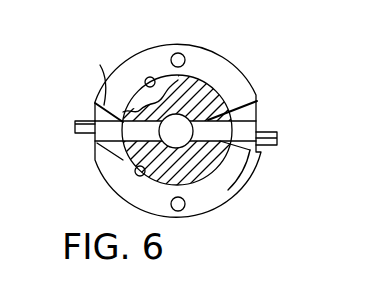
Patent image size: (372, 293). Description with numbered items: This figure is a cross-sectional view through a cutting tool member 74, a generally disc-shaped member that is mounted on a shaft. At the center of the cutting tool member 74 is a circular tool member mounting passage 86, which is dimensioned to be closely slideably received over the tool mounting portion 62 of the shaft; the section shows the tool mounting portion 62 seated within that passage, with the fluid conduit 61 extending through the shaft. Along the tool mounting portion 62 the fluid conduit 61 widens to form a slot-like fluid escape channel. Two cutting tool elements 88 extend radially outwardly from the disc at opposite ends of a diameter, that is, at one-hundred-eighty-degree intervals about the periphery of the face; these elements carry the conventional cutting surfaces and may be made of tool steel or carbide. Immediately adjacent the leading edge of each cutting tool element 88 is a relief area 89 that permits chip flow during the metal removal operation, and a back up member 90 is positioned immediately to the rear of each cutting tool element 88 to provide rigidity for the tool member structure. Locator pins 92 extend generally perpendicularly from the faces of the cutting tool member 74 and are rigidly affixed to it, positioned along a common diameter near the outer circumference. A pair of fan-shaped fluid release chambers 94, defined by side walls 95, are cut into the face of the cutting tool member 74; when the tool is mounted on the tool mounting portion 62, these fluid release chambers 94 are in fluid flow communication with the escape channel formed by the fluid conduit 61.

The fluid conduit 61 is at (219, 207).
The tool mounting portion 62 is at (218, 112).
The cutting tool member 74 is at (118, 66).
The tool member mounting passage 86 is at (151, 78).
The cutting tool element 88 is at (76, 127).
The relief area 89 is at (97, 134).
The back up member 90 is at (80, 114).
The locator pin 92 is at (182, 53).
The fluid release chamber 94 is at (95, 162).
The side wall 95 is at (98, 110).